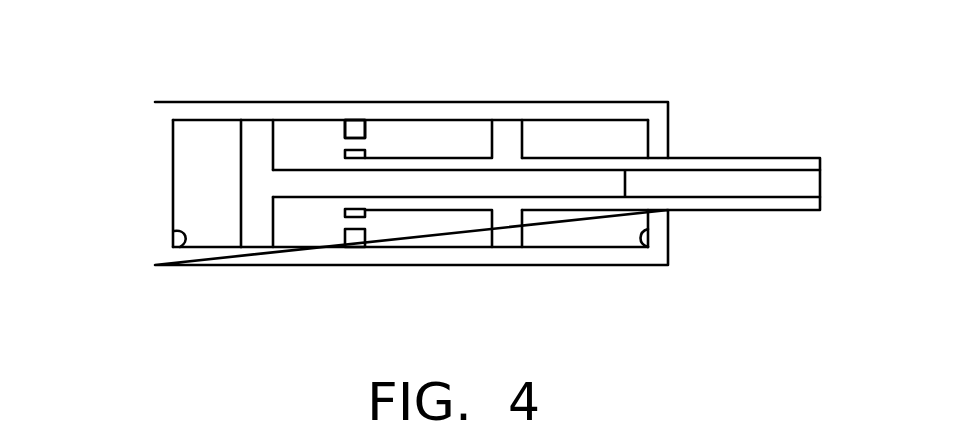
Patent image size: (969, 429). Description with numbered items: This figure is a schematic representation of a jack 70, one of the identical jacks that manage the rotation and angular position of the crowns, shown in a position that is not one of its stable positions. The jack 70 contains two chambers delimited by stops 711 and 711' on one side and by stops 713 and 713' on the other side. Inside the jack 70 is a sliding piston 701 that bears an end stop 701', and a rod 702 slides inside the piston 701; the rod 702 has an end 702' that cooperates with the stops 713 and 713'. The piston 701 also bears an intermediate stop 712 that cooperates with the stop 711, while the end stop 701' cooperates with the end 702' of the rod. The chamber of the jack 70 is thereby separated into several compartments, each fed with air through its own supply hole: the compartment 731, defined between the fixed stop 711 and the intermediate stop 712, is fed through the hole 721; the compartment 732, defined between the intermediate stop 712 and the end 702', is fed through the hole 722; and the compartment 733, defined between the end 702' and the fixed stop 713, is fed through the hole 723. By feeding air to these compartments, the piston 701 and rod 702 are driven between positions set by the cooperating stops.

The jack 70 is at (706, 87).
The sliding piston 701 is at (671, 218).
The end stop 701' is at (396, 235).
The rod 702 is at (546, 245).
The end of the rod 702' is at (211, 230).
The stop 711 is at (653, 286).
The stop 711' is at (388, 69).
The intermediate stop 712 is at (508, 235).
The stop 713 is at (124, 275).
The stop 713' is at (356, 294).
The hole 721 is at (647, 133).
The hole 722 is at (343, 128).
The hole 723 is at (172, 130).
The compartment 731 is at (558, 135).
The compartment 732 is at (432, 135).
The compartment 733 is at (212, 140).